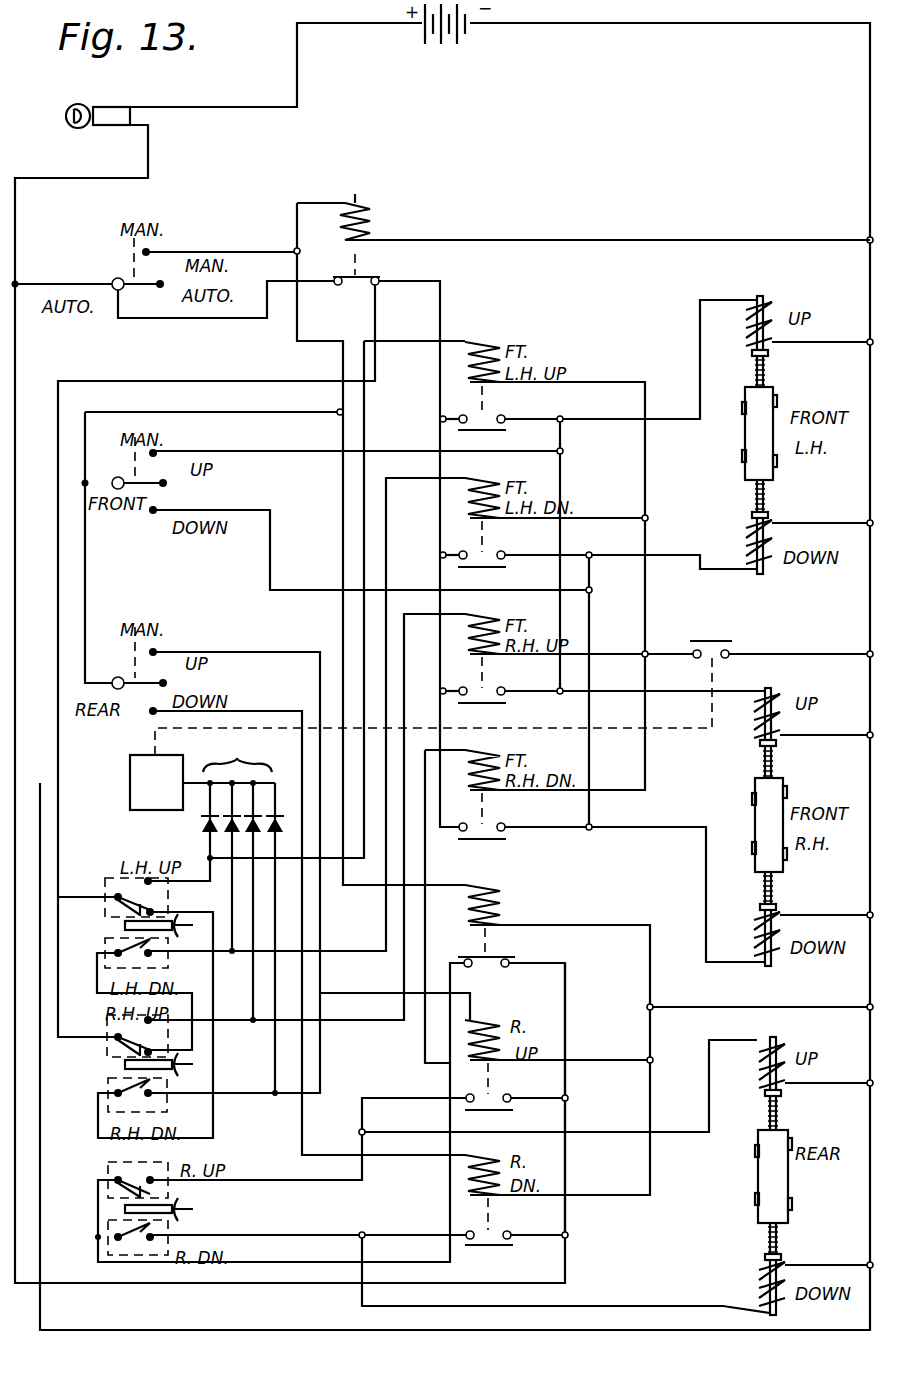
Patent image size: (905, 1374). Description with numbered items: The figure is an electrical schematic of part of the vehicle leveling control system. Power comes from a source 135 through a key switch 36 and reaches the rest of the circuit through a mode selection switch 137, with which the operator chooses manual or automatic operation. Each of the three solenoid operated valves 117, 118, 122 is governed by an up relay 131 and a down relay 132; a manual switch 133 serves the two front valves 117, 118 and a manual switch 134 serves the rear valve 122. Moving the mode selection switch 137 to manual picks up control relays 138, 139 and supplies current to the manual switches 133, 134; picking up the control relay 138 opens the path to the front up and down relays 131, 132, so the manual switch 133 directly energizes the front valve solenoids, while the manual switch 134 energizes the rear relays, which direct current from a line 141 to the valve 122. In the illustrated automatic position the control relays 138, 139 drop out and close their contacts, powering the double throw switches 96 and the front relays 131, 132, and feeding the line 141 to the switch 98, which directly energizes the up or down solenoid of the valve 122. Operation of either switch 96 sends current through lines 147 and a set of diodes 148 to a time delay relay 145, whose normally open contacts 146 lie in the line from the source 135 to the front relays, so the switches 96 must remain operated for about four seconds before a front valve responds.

The key switch 36 is at (100, 106).
The source 135 is at (445, 50).
The mode selection switch 137 is at (176, 260).
The control relay 138 is at (372, 217).
The manual switch 133 is at (176, 462).
The manual switch 134 is at (176, 660).
The up relay 131 is at (497, 400).
The down relay 132 is at (490, 540).
The three-way solenoid operated valve 117 is at (745, 435).
The three-way solenoid operated valve 118 is at (752, 835).
The solenoid operated three-way valve 122 is at (760, 1172).
The normally open contacts 146 is at (733, 645).
The time delay relay 145 is at (130, 757).
The lines 147 is at (192, 789).
The diodes 148 is at (200, 825).
The double throw switch 96 is at (102, 923).
The switch 98 is at (110, 1210).
The control relay 139 is at (505, 915).
The line 141 is at (172, 1286).